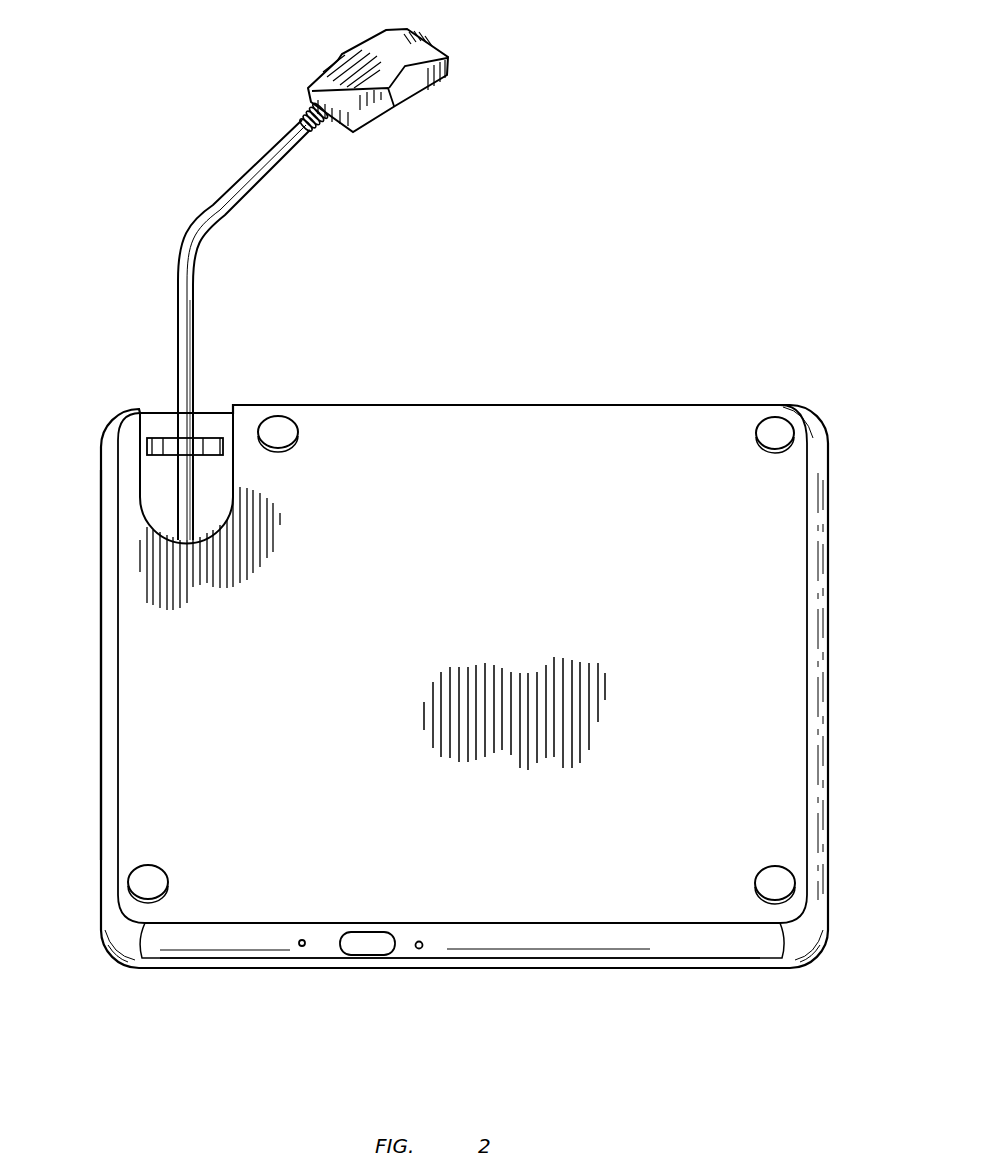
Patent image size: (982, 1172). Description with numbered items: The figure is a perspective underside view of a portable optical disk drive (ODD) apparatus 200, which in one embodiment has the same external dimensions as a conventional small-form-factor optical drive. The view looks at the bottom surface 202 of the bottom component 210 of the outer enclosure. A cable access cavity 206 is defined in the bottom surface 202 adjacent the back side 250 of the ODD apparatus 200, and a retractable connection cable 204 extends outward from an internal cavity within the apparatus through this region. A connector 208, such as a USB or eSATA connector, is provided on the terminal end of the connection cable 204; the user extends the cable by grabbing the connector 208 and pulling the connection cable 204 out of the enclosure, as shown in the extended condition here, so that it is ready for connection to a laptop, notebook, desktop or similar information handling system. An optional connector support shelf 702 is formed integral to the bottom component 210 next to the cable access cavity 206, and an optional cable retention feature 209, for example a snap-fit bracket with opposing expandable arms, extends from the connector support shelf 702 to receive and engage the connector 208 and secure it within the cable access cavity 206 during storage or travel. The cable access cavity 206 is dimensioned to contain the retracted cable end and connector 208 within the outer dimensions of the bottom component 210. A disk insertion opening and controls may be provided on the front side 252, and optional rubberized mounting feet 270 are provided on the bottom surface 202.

The portable optical disk drive (ODD) apparatus 200 is at (737, 226).
The bottom surface 202 is at (160, 735).
The retractable connection cable 204 is at (188, 240).
The cable access cavity 206 is at (207, 412).
The connector 208 is at (443, 85).
The cable retention feature 209 is at (163, 438).
The bottom component 210 is at (101, 625).
The back side 250 is at (530, 405).
The front side 252 is at (583, 942).
The mounting feet 270 is at (298, 445).
The connector support shelf 702 is at (160, 489).